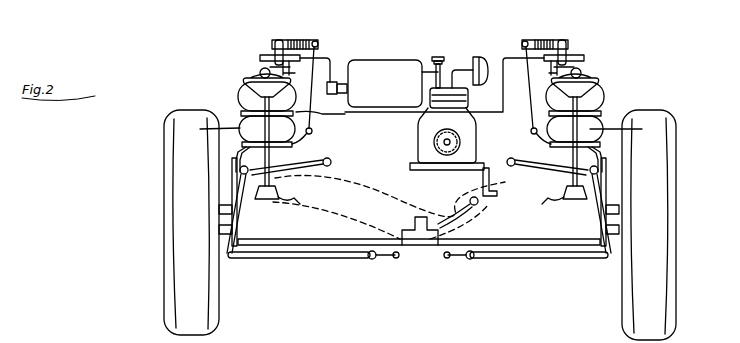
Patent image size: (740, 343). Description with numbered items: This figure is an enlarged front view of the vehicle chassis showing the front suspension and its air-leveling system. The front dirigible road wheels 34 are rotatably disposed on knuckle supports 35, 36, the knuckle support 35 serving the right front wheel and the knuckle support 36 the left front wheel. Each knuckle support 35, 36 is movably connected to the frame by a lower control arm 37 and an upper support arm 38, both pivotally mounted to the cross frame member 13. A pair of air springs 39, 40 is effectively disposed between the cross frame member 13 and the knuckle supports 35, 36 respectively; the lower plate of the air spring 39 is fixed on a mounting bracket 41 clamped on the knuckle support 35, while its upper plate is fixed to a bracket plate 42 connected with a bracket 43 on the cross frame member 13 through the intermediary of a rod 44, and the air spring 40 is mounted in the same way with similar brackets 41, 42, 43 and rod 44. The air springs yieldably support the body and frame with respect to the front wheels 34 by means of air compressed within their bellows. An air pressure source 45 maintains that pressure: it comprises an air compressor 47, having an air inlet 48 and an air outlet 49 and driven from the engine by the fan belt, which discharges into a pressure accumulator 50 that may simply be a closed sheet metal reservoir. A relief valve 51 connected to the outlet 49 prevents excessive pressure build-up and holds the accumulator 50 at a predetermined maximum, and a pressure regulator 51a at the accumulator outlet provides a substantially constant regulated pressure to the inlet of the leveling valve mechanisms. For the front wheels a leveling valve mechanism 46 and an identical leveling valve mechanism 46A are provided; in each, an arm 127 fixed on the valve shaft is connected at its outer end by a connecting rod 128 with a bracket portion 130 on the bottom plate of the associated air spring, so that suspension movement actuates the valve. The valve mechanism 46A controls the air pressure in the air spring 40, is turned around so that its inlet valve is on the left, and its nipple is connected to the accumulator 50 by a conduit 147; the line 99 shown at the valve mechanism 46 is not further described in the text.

The cross frame member 13 is at (378, 197).
The front dirigible road wheels 34 is at (163, 138).
The knuckle support 35 is at (221, 222).
The knuckle support 36 is at (619, 222).
The lower control arm 37 is at (311, 256).
The upper support arm 38 is at (302, 178).
The air spring 39 is at (232, 95).
The air spring 40 is at (609, 95).
The mounting bracket 41 is at (236, 165).
The bracket plate 42 is at (253, 80).
The bracket 43 is at (280, 201).
The rod 44 is at (198, 138).
The air pressure source 45 is at (453, 63).
The leveling valve mechanism 46 is at (257, 50).
The leveling valve mechanism 46A is at (576, 51).
The air compressor 47 is at (423, 128).
The air inlet 48 is at (486, 57).
The air outlet 49 is at (434, 63).
The pressure accumulator 50 is at (385, 89).
The relief valve 51 is at (438, 55).
The pressure regulator 51a is at (336, 82).
The air conduit 99 is at (322, 56).
The arm 127 is at (293, 38).
The connecting rod 128 is at (319, 114).
The bracket portion 130 is at (312, 139).
The conduit 147 is at (487, 112).